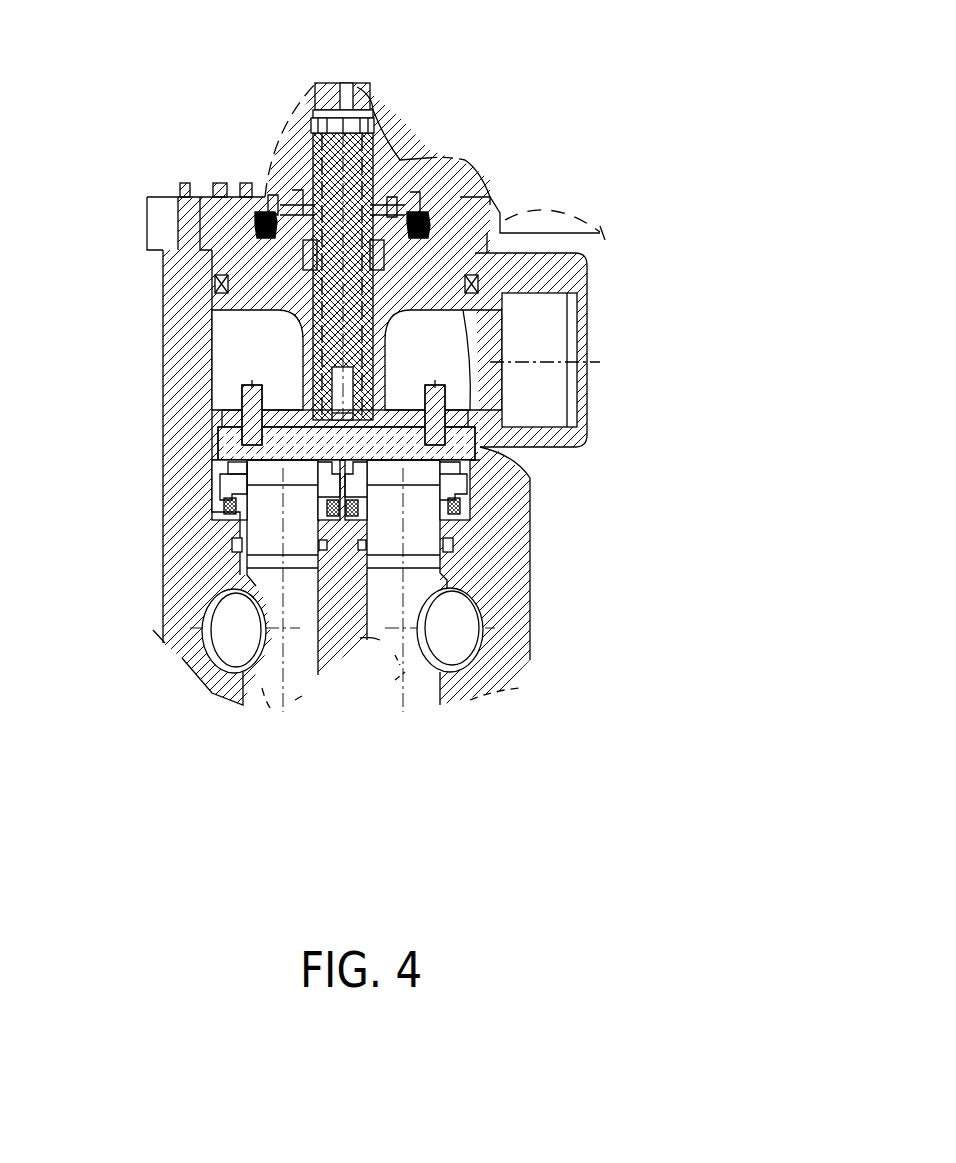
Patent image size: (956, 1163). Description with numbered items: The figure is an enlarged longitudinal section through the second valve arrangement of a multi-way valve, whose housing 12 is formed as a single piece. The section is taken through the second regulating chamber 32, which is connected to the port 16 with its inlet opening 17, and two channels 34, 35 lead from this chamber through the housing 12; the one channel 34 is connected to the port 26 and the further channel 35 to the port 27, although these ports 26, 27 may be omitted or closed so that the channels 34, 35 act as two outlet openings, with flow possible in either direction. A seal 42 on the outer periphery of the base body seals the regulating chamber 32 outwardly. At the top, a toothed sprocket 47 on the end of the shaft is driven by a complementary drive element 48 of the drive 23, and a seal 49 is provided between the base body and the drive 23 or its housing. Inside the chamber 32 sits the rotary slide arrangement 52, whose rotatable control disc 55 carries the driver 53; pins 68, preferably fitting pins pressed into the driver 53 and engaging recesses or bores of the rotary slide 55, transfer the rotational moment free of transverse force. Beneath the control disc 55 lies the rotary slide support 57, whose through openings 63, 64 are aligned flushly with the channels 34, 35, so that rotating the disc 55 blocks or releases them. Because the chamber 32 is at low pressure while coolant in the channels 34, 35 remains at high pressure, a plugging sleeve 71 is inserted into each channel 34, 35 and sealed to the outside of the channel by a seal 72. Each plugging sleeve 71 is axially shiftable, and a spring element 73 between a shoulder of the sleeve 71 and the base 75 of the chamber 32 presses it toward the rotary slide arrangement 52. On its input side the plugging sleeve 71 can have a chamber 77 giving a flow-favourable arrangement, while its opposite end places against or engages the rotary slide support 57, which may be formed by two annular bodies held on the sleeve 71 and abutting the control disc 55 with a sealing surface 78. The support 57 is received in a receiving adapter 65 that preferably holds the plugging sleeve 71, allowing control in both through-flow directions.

The housing 12 is at (520, 644).
The port 16 is at (553, 336).
The inlet opening 17 is at (605, 346).
The drive 23 is at (428, 138).
The port 26 is at (223, 667).
The port 27 is at (467, 644).
The second regulating chamber 32 is at (235, 355).
The channel 34 is at (262, 690).
The channel 35 is at (425, 675).
The seal 42 is at (215, 290).
The toothed sprocket 47 is at (375, 160).
The drive element 48 is at (368, 125).
The seal 49 is at (480, 174).
The rotary slide arrangement 52 is at (205, 419).
The driver 53 is at (462, 433).
The rotary slide 55 is at (457, 440).
The rotary slide support 57 is at (235, 478).
The through opening 63 is at (436, 534).
The through opening 64 is at (279, 529).
The receiving adapter 65 is at (480, 493).
The pin 68 is at (440, 395).
The plugging sleeve 71 is at (240, 530).
The seal 72 is at (240, 547).
The spring element 73 is at (455, 510).
The base 75 is at (232, 496).
The chamber 77 is at (450, 556).
The sealing surface 78 is at (240, 462).